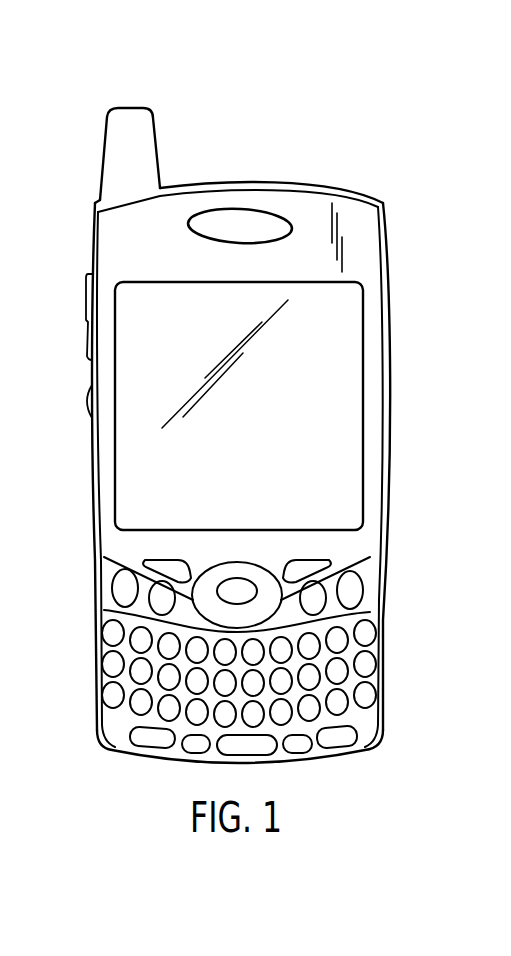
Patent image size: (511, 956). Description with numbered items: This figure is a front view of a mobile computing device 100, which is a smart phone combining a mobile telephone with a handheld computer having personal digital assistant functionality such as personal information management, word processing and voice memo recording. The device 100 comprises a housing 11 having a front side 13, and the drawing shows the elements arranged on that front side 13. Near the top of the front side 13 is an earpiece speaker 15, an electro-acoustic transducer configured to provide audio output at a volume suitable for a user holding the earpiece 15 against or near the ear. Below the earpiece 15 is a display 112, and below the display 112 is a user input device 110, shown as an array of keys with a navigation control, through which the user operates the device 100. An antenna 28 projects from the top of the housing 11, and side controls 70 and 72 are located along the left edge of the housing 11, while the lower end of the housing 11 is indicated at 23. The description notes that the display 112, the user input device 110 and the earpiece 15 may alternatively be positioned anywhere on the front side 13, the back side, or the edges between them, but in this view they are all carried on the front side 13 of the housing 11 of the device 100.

The mobile computing device 100 is at (346, 114).
The housing 11 is at (358, 228).
The front side 13 is at (151, 255).
The earpiece speaker 15 is at (232, 221).
The bottom end of housing 23 is at (368, 745).
The antenna 28 is at (157, 147).
The side button 70 is at (88, 302).
The side button 72 is at (85, 403).
The user input device 110 is at (363, 668).
The display 112 is at (346, 367).